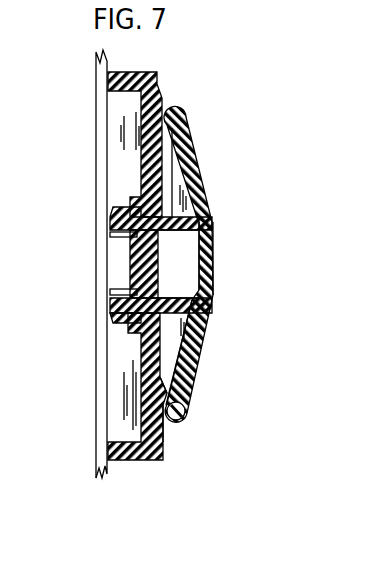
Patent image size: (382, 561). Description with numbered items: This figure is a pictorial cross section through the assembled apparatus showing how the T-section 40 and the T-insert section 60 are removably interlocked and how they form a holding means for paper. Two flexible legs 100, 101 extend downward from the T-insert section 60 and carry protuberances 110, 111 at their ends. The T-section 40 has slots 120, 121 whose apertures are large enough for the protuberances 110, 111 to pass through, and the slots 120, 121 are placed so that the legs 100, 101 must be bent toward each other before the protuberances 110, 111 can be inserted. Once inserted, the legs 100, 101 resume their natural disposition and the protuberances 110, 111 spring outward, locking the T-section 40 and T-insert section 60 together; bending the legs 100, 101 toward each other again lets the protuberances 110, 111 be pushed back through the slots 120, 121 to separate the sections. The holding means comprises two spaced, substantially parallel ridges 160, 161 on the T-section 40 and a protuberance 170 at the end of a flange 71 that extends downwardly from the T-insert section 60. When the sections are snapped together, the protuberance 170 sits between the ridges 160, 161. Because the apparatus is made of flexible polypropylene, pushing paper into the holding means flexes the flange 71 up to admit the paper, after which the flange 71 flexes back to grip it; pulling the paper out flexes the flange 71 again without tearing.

The T-section 40 is at (127, 459).
The leg 100 is at (211, 210).
The T-insert section 60 is at (213, 252).
The flange 71 is at (200, 356).
The leg 101 is at (168, 297).
The protuberance 110 is at (128, 210).
The protuberance 111 is at (121, 311).
The slot 120 is at (126, 233).
The slot 121 is at (140, 291).
The ridge 160 is at (161, 379).
The protuberance 170 is at (187, 416).
The ridge 161 is at (165, 438).